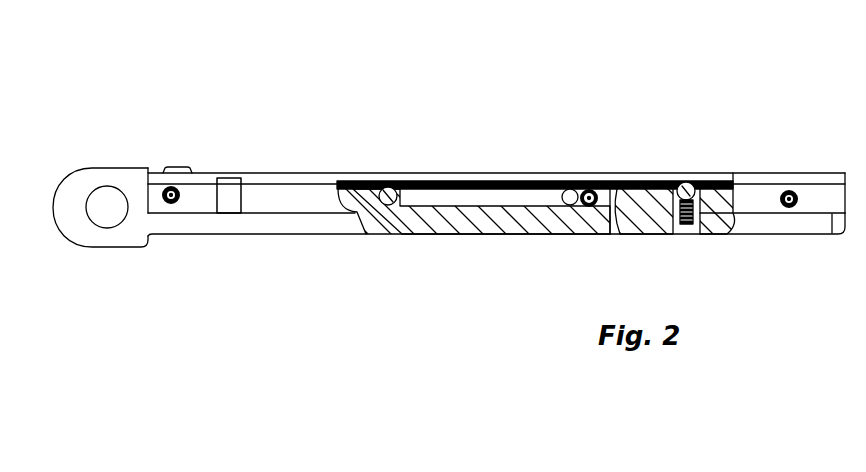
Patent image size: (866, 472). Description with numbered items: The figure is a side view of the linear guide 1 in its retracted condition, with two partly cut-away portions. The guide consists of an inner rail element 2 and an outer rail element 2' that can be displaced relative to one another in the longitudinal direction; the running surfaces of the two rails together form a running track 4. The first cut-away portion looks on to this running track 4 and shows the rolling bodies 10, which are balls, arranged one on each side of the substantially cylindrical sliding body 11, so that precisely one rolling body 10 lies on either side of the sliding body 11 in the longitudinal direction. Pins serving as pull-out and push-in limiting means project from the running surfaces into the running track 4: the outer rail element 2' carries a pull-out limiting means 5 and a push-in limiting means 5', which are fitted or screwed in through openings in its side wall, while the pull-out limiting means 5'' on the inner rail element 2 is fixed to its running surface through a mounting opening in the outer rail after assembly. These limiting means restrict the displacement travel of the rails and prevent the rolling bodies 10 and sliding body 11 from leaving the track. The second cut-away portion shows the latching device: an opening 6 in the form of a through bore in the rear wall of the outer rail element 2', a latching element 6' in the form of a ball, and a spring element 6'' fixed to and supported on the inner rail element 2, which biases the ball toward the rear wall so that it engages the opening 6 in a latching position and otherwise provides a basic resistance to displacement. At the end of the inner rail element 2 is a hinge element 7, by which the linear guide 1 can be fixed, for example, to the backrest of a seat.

The linear guide 1 is at (452, 184).
The inner rail element 2 is at (449, 156).
The outer rail element 2' is at (496, 274).
The running track 4 is at (535, 134).
The pull-out limiting means 5 is at (191, 126).
The push-in limiting means 5' is at (619, 132).
The pull-out limiting means 5'' is at (818, 128).
The opening 6 is at (703, 142).
The latching element 6' is at (549, 246).
The spring element 6'' is at (541, 249).
The hinge element 7 is at (107, 142).
The rolling bodies 10 is at (541, 270).
The sliding body 11 is at (541, 262).